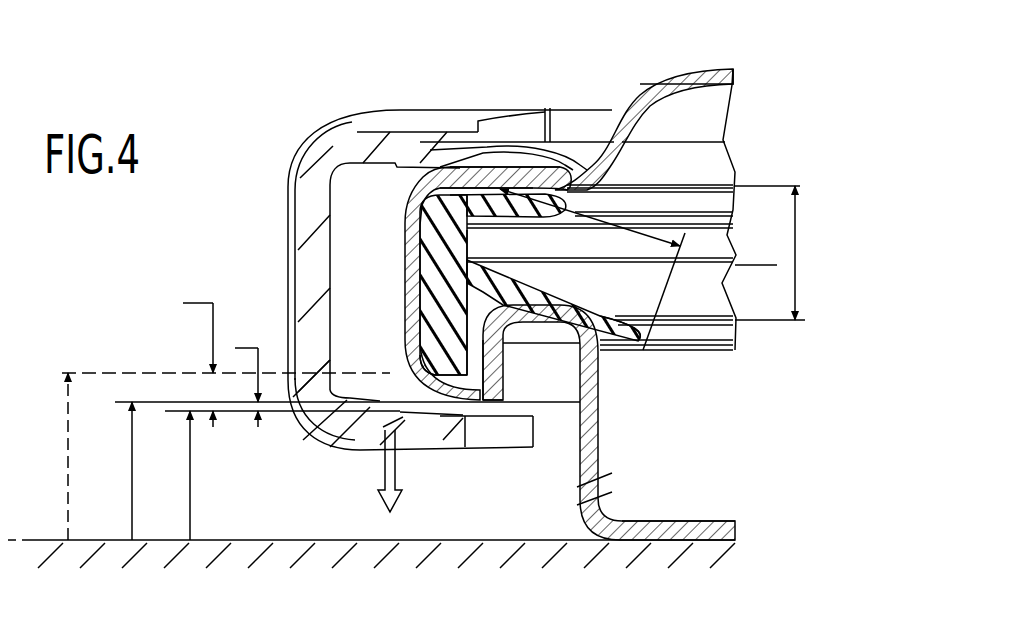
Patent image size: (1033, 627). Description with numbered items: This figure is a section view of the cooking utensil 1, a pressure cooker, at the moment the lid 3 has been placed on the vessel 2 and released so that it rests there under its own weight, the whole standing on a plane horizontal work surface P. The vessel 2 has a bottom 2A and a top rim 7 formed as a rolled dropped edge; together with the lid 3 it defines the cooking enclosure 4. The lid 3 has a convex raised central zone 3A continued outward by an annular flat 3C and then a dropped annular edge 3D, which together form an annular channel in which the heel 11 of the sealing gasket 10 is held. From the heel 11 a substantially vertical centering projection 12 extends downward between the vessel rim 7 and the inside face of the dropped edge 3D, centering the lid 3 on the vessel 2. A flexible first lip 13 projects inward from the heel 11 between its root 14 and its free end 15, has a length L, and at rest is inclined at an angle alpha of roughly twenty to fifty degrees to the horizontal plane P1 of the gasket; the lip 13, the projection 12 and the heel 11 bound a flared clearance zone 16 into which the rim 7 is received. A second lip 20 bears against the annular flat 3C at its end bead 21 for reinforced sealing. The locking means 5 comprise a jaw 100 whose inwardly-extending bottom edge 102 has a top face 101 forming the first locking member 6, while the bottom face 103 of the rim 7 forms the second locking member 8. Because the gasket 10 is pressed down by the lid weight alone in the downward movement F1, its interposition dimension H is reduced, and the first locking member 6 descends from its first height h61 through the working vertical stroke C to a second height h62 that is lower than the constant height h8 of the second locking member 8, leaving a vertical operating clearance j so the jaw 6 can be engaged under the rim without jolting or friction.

The cooking utensil 1 is at (292, 126).
The vessel 2 is at (603, 466).
The bottom of the vessel 2A is at (675, 533).
The lid 3 is at (622, 93).
The convex and raised central zone 3A is at (704, 78).
The annular flat 3C is at (517, 177).
The dropped annular edge 3D is at (410, 225).
The cooking enclosure 4 is at (701, 439).
The locking means 5 is at (322, 458).
The first locking member 6 is at (355, 148).
The top rim 7 is at (553, 388).
The second locking member 8 is at (496, 360).
The sealing gasket 10 is at (439, 207).
The heel 11 is at (438, 268).
The centering projection 12 is at (432, 352).
The first lip 13 is at (635, 332).
The root 14 is at (489, 268).
The free end 15 is at (647, 330).
The clearance zone 16 is at (468, 312).
The second lip 20 is at (475, 202).
The end bead 21 is at (558, 170).
The jaw 100 is at (300, 214).
The top face 101 is at (451, 419).
The inwardly-extending bottom edge 102 is at (427, 436).
The bottom face 103 is at (496, 407).
The work surface P is at (321, 545).
The downward movement F1 is at (385, 486).
The length of the first lip L is at (612, 222).
The interposition dimension H is at (797, 262).
The horizontal plane of the gasket P1 is at (745, 264).
The working vertical stroke C is at (198, 352).
The vertical operating clearance j is at (246, 370).
The first height h61 is at (70, 440).
The height of the second locking member h8 is at (132, 490).
The second height h62 is at (192, 490).
The angle of inclination of the first lip alpha is at (579, 294).